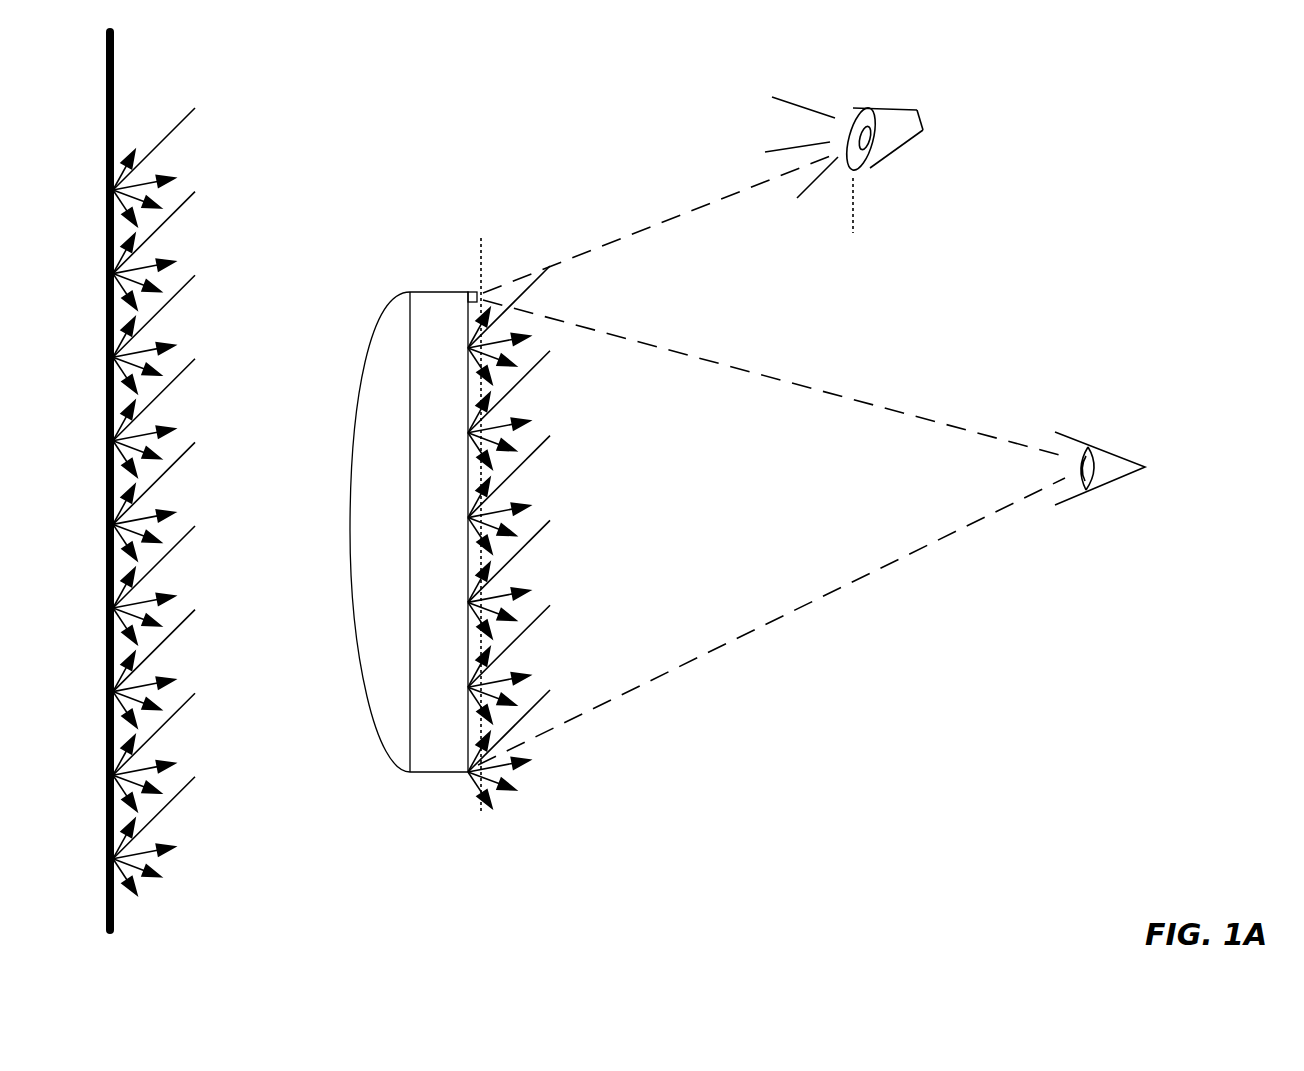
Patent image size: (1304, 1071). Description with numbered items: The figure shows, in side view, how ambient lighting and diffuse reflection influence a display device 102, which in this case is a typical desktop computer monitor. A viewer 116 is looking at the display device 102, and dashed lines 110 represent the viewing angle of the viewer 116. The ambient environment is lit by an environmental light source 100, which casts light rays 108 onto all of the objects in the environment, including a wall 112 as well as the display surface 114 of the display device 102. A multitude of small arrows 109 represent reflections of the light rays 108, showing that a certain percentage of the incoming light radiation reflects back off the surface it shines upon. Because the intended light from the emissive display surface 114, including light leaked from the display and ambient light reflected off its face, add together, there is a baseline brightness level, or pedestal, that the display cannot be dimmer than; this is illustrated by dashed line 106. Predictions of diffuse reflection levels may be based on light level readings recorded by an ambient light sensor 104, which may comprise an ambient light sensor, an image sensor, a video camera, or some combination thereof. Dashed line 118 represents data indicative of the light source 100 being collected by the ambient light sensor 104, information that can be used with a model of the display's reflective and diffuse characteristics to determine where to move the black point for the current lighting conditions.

The environmental light source 100 is at (878, 106).
The display device 102 is at (420, 291).
The ambient light sensor 104 is at (470, 290).
The dashed line representing baseline brightness level 106 is at (484, 280).
The light rays 108 is at (182, 203).
The small arrows representing reflections of light rays 109 is at (173, 240).
The dashed lines representing viewing angle 110 is at (800, 385).
The wall 112 is at (113, 95).
The display surface 114 is at (467, 727).
The viewer 116 is at (1060, 432).
The dashed line representing collected light source data 118 is at (672, 216).